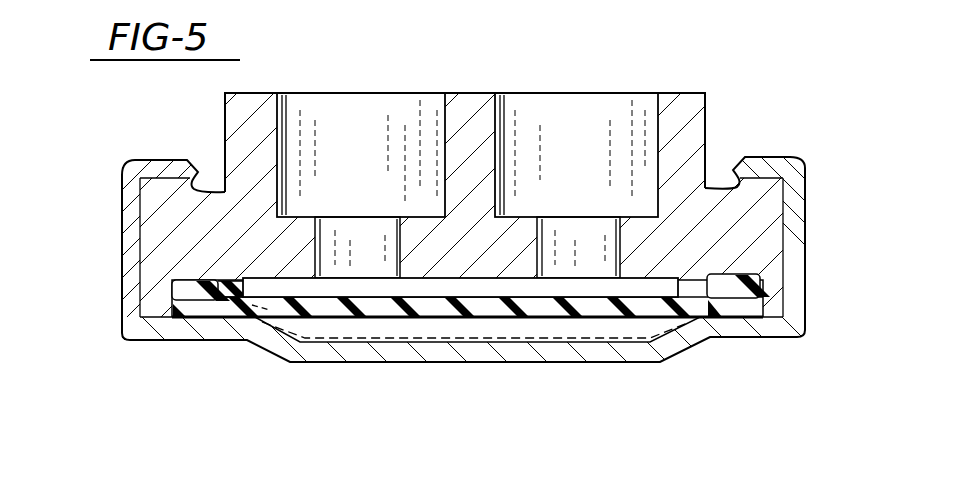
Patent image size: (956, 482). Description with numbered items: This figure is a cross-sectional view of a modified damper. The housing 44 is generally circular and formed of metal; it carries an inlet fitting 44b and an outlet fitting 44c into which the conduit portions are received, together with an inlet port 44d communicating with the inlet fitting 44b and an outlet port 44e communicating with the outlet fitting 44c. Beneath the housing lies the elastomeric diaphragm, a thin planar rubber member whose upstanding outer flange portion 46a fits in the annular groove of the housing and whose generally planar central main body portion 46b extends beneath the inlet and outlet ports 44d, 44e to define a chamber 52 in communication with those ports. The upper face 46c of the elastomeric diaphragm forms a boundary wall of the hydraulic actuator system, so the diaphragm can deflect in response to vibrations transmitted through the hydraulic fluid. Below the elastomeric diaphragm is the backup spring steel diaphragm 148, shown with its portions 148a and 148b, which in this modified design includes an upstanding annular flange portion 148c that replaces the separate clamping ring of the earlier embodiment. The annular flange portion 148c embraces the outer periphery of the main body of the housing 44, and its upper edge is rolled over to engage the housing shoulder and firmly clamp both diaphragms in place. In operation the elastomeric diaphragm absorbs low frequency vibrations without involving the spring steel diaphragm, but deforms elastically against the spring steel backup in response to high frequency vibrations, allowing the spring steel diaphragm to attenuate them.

The housing 44 is at (478, 241).
The inlet fitting 44b is at (286, 122).
The outlet fitting 44c is at (650, 124).
The inlet port 44d is at (320, 238).
The outlet port 44e is at (620, 236).
The outer flange portion 46a is at (740, 300).
The central main body portion 46b is at (612, 316).
The upper face 46c is at (540, 288).
The chamber 52 is at (497, 277).
The heat sink shell 148 is at (478, 241).
The shell flange 148a is at (156, 162).
The shell bottom wall 148b is at (445, 363).
The annular flange portion 148c is at (122, 263).